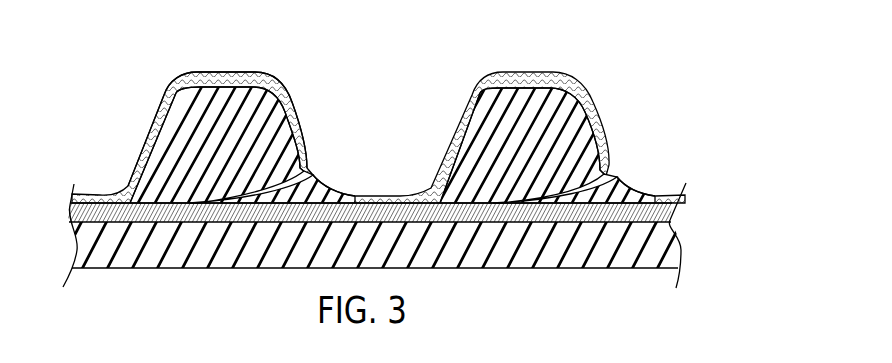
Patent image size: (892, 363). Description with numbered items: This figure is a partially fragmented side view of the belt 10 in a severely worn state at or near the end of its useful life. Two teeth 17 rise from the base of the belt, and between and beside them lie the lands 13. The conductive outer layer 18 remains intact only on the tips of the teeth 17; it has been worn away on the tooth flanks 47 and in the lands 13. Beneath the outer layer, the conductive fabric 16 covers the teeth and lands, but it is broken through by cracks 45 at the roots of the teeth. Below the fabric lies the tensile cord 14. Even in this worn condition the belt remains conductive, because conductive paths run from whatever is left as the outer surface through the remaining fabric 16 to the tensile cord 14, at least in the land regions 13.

The belt 10 is at (622, 77).
The lands 13 is at (373, 193).
The tensile cord 14 is at (672, 213).
The conductive fabric 16 is at (140, 167).
The teeth 17 is at (223, 72).
The conductive outer layer 18 is at (260, 78).
The cracks 45 is at (309, 173).
The tooth flanks 47 is at (157, 125).